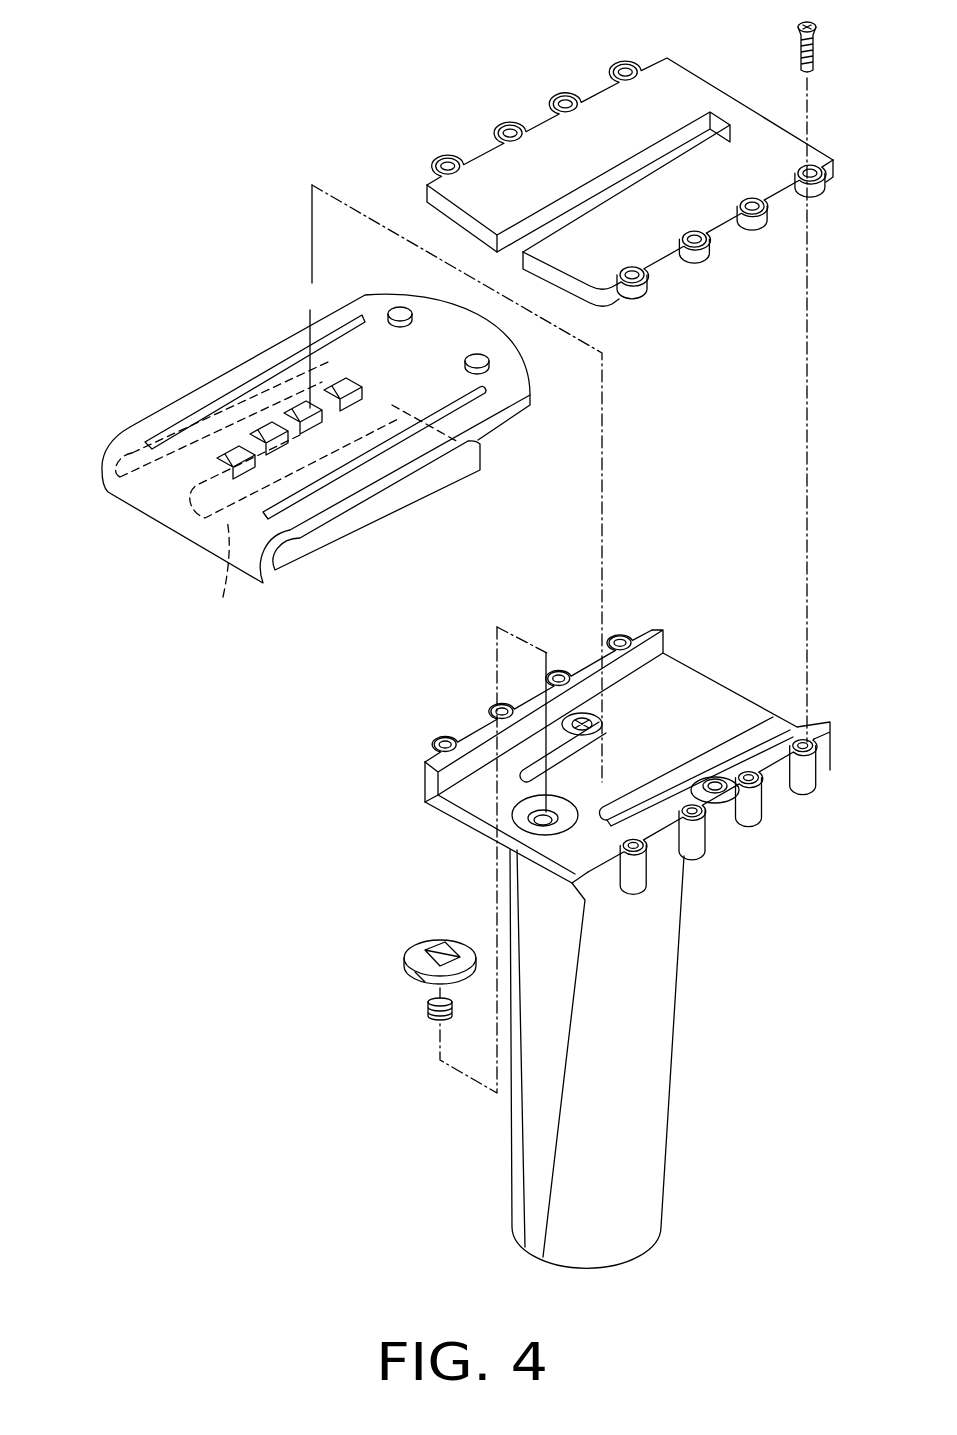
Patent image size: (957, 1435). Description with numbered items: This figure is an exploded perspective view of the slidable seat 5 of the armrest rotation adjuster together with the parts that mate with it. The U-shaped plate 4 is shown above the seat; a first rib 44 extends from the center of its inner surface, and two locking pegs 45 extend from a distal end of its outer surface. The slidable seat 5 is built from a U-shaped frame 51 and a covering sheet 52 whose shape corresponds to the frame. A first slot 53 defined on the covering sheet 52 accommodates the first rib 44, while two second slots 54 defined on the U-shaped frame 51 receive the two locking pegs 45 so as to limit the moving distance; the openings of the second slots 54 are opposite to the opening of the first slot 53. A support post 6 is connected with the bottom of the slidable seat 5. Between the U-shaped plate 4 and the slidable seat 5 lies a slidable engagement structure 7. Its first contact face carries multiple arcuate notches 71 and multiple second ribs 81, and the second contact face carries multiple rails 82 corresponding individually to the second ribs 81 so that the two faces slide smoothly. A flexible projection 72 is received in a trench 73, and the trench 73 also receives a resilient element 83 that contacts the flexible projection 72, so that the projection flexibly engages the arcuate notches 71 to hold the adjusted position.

The U-shaped plate 4 is at (342, 403).
The first rib 44 is at (295, 533).
The locking pegs 45 is at (405, 307).
The slidable seat 5 is at (597, 806).
The U-shaped frame 51 is at (597, 806).
The covering sheet 52 is at (624, 153).
The first slot 53 is at (590, 185).
The second slots 54 is at (703, 680).
The support post 6 is at (617, 1167).
The slidable engagement structure 7 is at (288, 350).
The arcuate notches 71 is at (255, 432).
The flexible projection 72 is at (440, 950).
The trench 73 is at (587, 798).
The second ribs 81 is at (298, 345).
The rails 82 is at (477, 773).
The resilient element 83 is at (427, 1010).